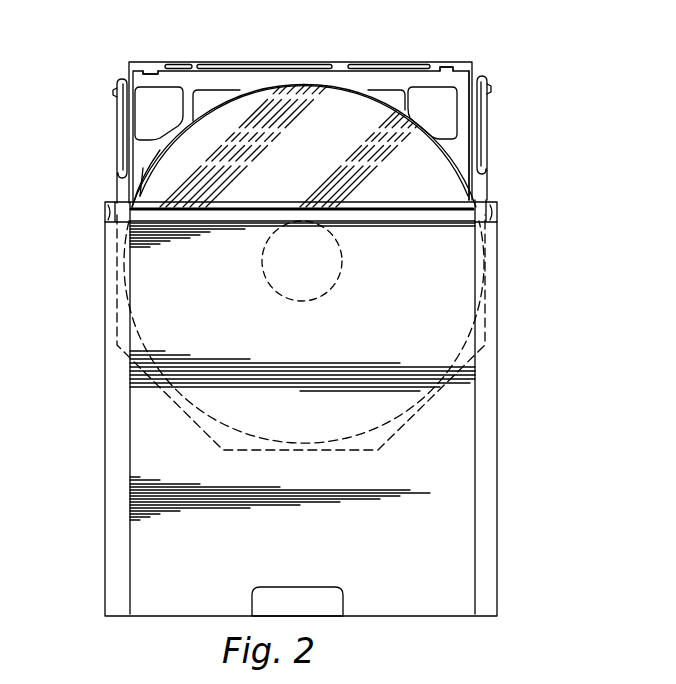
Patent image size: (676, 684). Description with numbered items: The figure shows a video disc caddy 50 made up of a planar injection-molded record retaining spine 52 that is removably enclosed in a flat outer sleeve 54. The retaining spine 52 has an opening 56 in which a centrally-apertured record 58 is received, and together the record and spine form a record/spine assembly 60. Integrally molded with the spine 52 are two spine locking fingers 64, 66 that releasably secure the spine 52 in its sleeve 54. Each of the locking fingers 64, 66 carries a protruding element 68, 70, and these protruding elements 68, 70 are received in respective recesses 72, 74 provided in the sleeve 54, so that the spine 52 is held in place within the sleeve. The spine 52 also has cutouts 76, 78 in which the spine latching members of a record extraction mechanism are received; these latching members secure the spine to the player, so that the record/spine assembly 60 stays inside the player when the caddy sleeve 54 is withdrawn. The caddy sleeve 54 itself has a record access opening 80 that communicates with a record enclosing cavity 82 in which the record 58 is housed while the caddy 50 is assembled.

The video disc caddy 50 is at (504, 188).
The record retaining spine 52 is at (217, 77).
The outer sleeve 54 is at (465, 478).
The opening 56 is at (450, 152).
The centrally-apertured record 58 is at (150, 187).
The record/spine assembly 60 is at (492, 64).
The spine locking finger 64 is at (115, 132).
The spine locking finger 66 is at (481, 137).
The protruding element 68 is at (112, 95).
The protruding element 70 is at (490, 88).
The recess 72 is at (107, 223).
The recess 74 is at (493, 222).
The cutout 76 is at (150, 69).
The cutout 78 is at (443, 67).
The record access opening 80 is at (263, 208).
The record enclosing cavity 82 is at (143, 553).